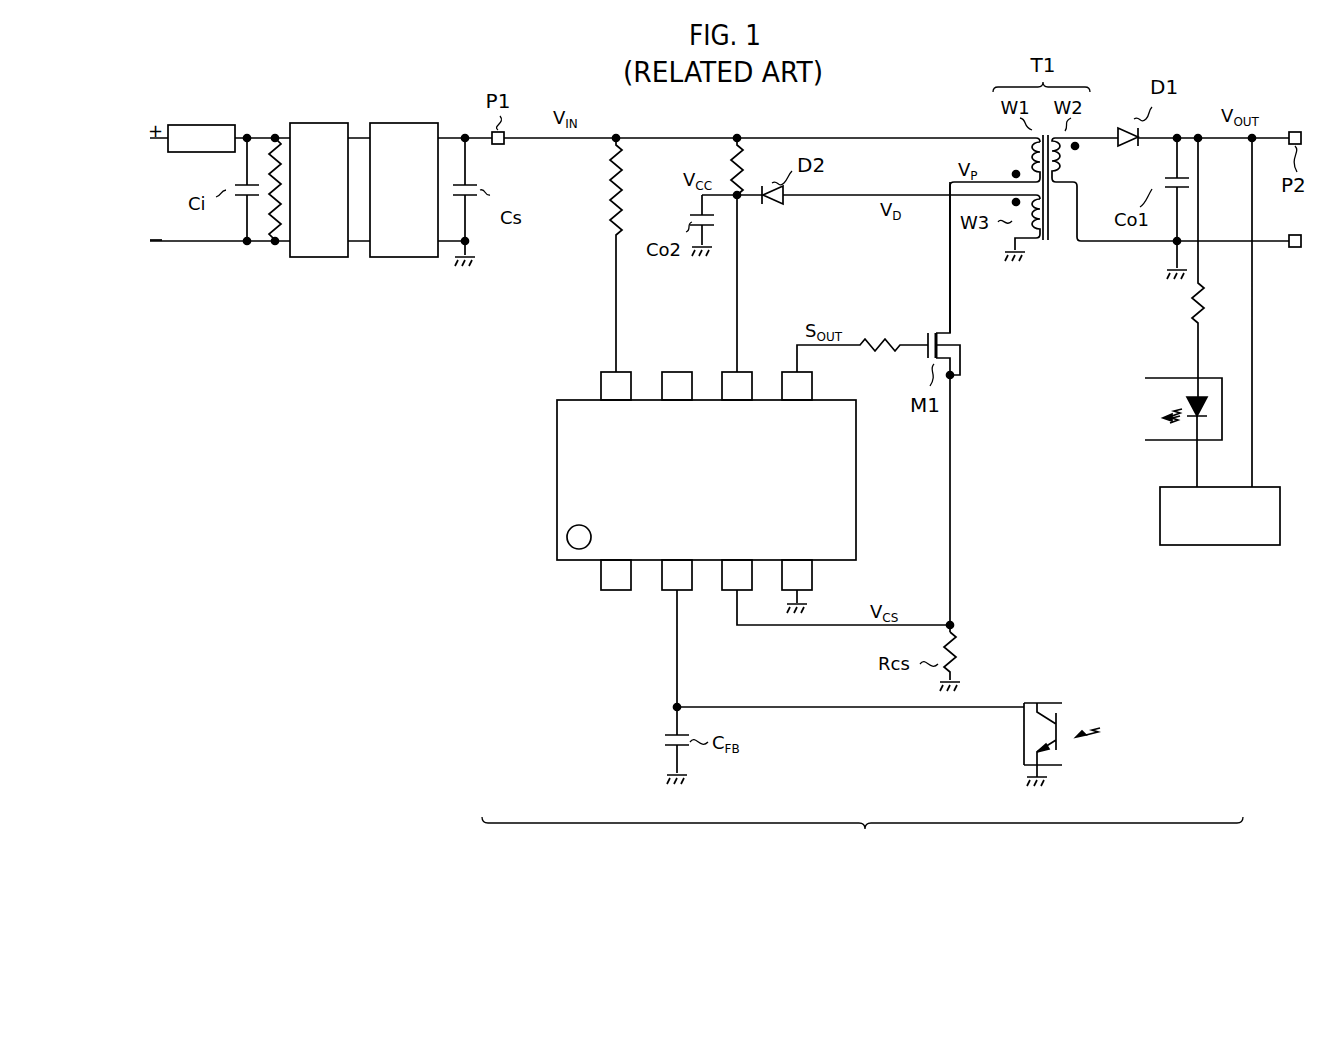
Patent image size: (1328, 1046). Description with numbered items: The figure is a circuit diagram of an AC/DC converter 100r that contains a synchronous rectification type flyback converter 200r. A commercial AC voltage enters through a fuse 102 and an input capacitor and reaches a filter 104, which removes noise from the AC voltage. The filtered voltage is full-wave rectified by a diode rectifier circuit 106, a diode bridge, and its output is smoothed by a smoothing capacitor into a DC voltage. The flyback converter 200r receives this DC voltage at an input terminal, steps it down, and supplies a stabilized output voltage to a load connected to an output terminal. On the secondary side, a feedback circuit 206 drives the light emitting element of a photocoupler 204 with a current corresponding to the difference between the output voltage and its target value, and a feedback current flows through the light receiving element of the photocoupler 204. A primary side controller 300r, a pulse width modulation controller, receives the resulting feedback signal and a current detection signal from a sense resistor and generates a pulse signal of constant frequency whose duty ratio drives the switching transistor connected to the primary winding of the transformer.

The fuse 102 is at (210, 124).
The filter 104 is at (322, 122).
The diode rectifier circuit 106 is at (407, 122).
The photocoupler 204 is at (1235, 360).
The feedback circuit 206 is at (1233, 547).
The primary side controller 300r is at (858, 478).
The flyback converter 200r is at (862, 839).
The AC/DC converter 100r is at (781, 883).